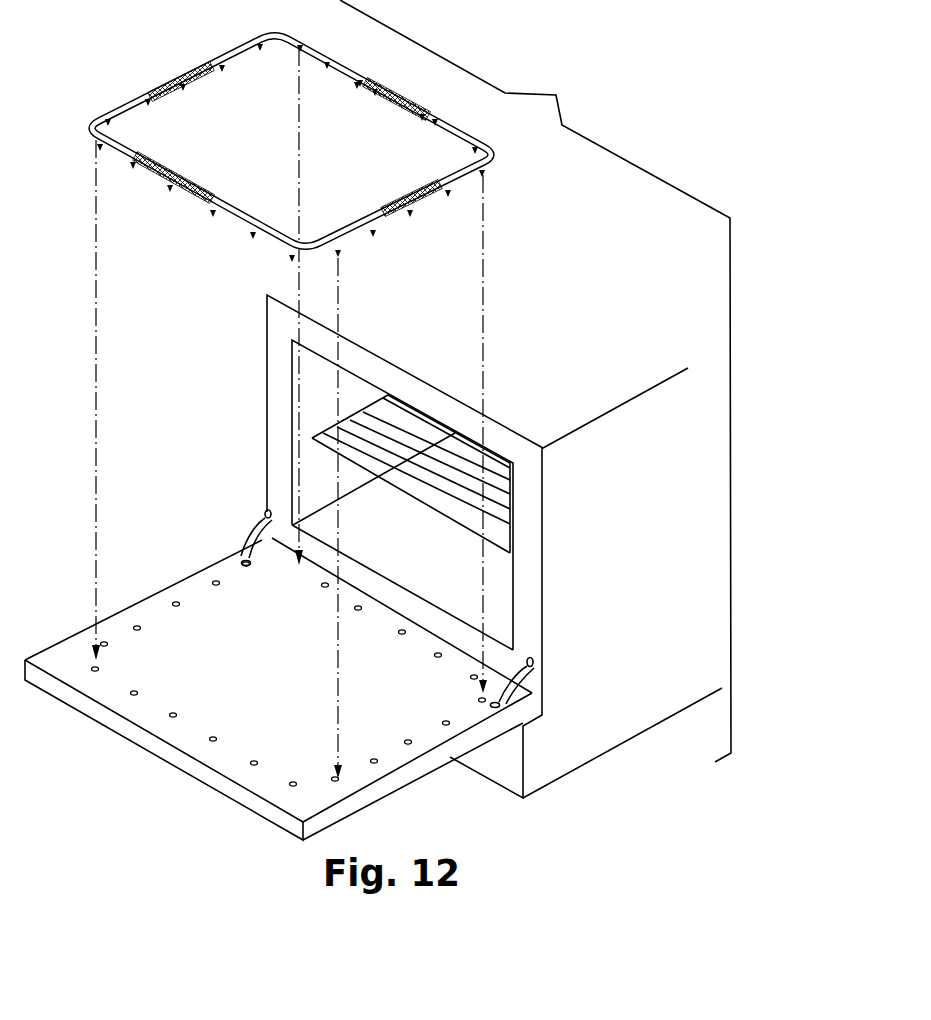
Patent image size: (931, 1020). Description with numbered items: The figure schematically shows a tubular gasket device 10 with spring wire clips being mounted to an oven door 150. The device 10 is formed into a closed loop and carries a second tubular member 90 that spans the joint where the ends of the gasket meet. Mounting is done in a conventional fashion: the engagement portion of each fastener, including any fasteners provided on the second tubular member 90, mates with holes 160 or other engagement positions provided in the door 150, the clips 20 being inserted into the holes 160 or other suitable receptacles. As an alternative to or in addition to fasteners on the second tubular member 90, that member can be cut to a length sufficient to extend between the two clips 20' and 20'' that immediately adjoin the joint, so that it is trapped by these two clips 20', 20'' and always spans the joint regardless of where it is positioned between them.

The device 10 is at (196, 58).
The clips 20 is at (291, 153).
The clip 20' is at (334, 101).
The clip 20'' is at (432, 146).
The second tubular member 90 is at (398, 103).
The oven door 150 is at (219, 792).
The holes 160 is at (243, 562).